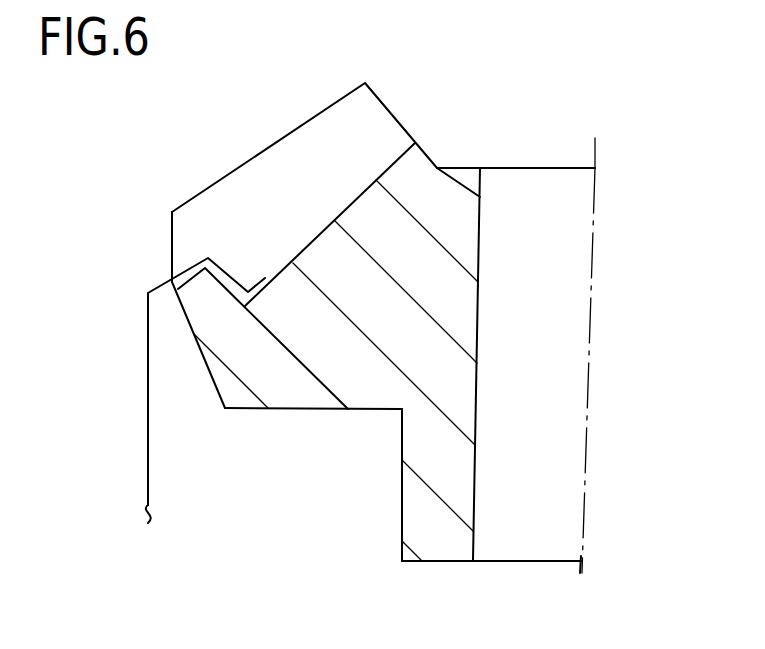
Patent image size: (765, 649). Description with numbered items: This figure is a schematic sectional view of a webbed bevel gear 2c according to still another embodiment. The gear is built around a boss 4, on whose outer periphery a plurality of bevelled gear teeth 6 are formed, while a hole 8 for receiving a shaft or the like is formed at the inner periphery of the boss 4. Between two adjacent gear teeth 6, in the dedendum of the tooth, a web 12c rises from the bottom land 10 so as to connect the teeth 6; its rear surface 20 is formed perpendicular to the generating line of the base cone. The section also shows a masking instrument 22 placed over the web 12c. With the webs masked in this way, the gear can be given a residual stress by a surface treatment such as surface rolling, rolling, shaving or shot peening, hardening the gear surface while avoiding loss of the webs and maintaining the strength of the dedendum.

The recess 2c is at (372, 461).
The boss 4 is at (466, 256).
The gear teeth 6 is at (250, 190).
The hole 8 is at (470, 507).
The bottom land 10 is at (347, 207).
The projection 12c is at (212, 305).
The rear surface 20 is at (222, 280).
The masking instrument 22 is at (148, 377).